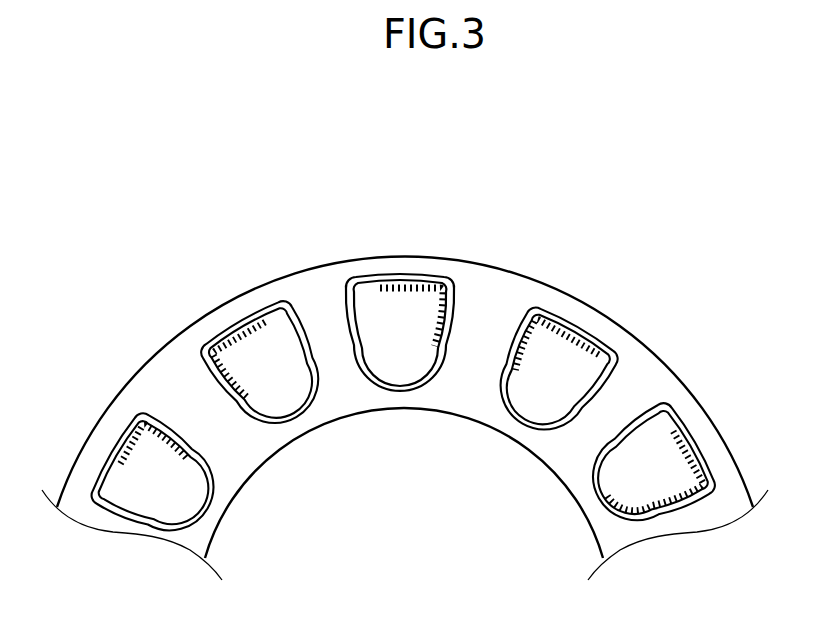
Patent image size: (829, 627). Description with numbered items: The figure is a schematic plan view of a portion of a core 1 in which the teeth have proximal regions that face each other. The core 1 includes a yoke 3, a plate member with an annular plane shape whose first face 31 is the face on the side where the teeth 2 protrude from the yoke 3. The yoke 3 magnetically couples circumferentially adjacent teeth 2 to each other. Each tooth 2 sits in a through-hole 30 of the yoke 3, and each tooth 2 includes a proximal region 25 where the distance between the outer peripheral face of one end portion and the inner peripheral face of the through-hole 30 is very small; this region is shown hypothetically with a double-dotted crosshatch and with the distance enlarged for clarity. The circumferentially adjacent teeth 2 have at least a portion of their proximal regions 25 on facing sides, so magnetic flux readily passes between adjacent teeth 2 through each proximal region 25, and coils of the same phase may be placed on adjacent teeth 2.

The core 1 is at (148, 232).
The tooth 2 is at (399, 363).
The yoke 3 is at (603, 305).
The proximal region 25 is at (530, 307).
The through-hole 30 is at (355, 327).
The first face 31 is at (383, 264).